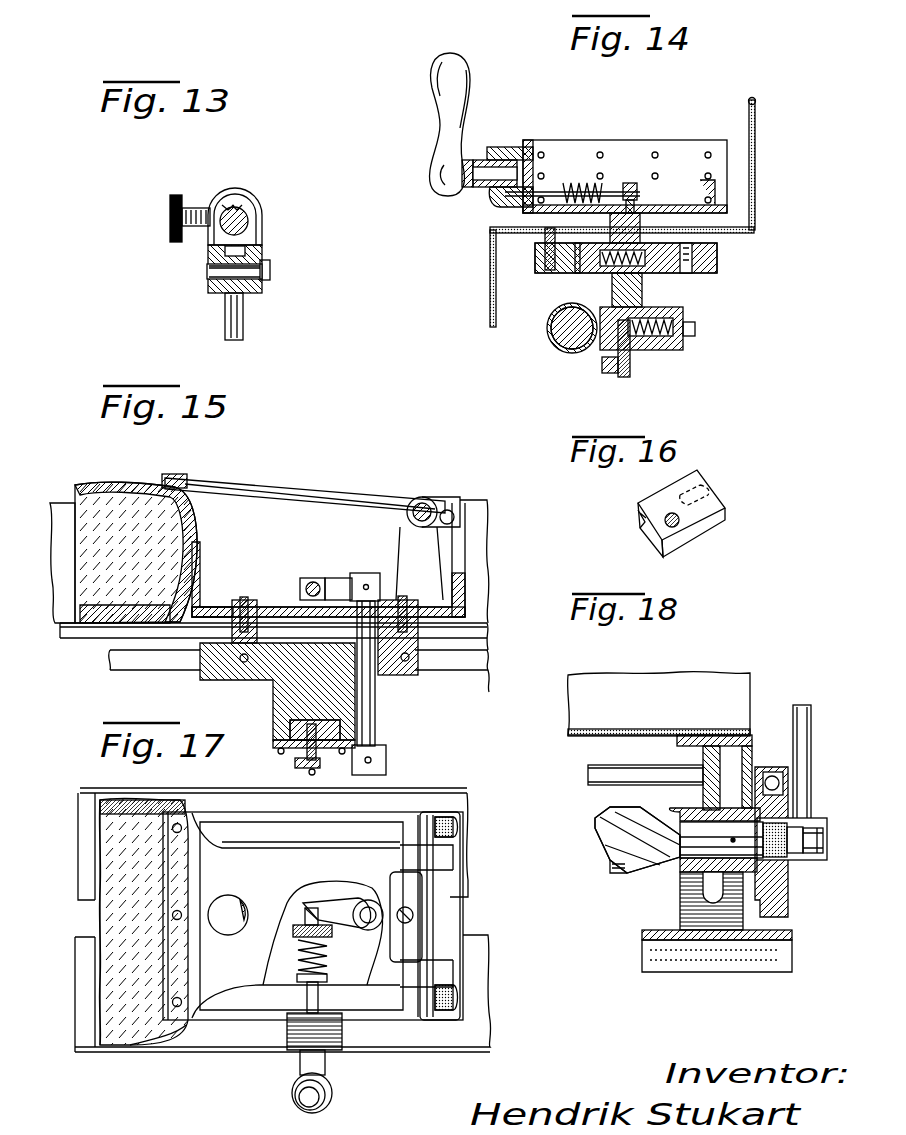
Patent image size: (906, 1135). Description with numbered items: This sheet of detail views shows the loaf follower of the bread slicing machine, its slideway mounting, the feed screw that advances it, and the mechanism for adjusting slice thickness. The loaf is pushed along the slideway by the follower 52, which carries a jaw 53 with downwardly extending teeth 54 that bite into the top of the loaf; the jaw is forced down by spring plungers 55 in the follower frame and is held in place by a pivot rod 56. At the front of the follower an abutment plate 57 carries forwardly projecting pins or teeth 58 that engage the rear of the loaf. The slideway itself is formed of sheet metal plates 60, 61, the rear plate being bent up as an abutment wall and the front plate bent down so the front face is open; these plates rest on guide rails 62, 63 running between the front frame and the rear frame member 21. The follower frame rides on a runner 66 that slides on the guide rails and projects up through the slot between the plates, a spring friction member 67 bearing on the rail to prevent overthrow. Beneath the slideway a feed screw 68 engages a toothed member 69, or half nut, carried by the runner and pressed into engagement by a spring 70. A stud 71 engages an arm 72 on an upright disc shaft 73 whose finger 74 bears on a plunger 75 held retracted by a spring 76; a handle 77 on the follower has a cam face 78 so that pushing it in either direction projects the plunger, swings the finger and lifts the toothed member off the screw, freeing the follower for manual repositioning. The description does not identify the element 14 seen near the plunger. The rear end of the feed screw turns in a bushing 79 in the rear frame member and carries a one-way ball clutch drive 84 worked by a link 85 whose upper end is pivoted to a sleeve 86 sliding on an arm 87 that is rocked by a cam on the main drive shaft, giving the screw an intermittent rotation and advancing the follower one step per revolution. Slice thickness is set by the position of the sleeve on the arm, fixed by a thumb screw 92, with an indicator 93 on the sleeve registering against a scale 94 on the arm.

In FIG. 14, the adjusting nut 14 is at (637, 190).
In FIG. 18, the rear frame member 21 is at (722, 755).
In FIG. 15, the follower 52 is at (430, 580).
In FIG. 17, the follower 52 is at (270, 1018).
In FIG. 15, the jaw 53 is at (300, 490).
In FIG. 17, the jaw 53 is at (270, 870).
In FIG. 15, the teeth 54 is at (160, 480).
In FIG. 17, the spring plungers 55 is at (458, 826).
In FIG. 15, the pivot rod 56 is at (432, 500).
In FIG. 17, the pivot rod 56 is at (430, 915).
In FIG. 15, the abutment plate 57 is at (200, 580).
In FIG. 15, the pins or teeth 58 is at (185, 600).
In FIG. 14, the front sheet metal plate 60 is at (523, 233).
In FIG. 14, the rear sheet metal plate 61 is at (744, 222).
In FIG. 14, the guide rail 62 is at (545, 270).
In FIG. 14, the guide rail 63 is at (705, 275).
In FIG. 14, the runner 66 is at (665, 270).
In FIG. 15, the runner 66 is at (285, 690).
In FIG. 14, the spring friction member 67 is at (575, 280).
In FIG. 14, the feed screw 68 is at (566, 352).
In FIG. 18, the feed screw 68 is at (630, 808).
In FIG. 14, the toothed member 69 is at (565, 340).
In FIG. 16, the toothed member 69 is at (690, 520).
In FIG. 14, the spring 70 is at (684, 345).
In FIG. 14, the stud 71 is at (632, 370).
In FIG. 14, the arm 72 is at (608, 372).
In FIG. 15, the arm 72 is at (305, 765).
In FIG. 15, the disc shaft 73 is at (375, 698).
In FIG. 17, the disc shaft 73 is at (370, 906).
In FIG. 17, the finger 74 is at (333, 898).
In FIG. 14, the plunger 75 is at (553, 192).
In FIG. 15, the plunger 75 is at (318, 580).
In FIG. 17, the plunger 75 is at (318, 995).
In FIG. 14, the spring 76 is at (584, 183).
In FIG. 17, the spring 76 is at (330, 952).
In FIG. 14, the handle 77 is at (466, 96).
In FIG. 17, the handle 77 is at (332, 1093).
In FIG. 14, the cam face 78 is at (510, 206).
In FIG. 18, the bushing 79 is at (693, 877).
In FIG. 18, the one-way ball clutch drive 84 is at (788, 800).
In FIG. 13, the link 85 is at (243, 316).
In FIG. 18, the link 85 is at (811, 742).
In FIG. 13, the sleeve 86 is at (252, 202).
In FIG. 13, the arm 87 is at (248, 224).
In FIG. 13, the thumb screw 92 is at (170, 214).
In FIG. 13, the indicator 93 is at (228, 205).
In FIG. 13, the scale 94 is at (240, 205).